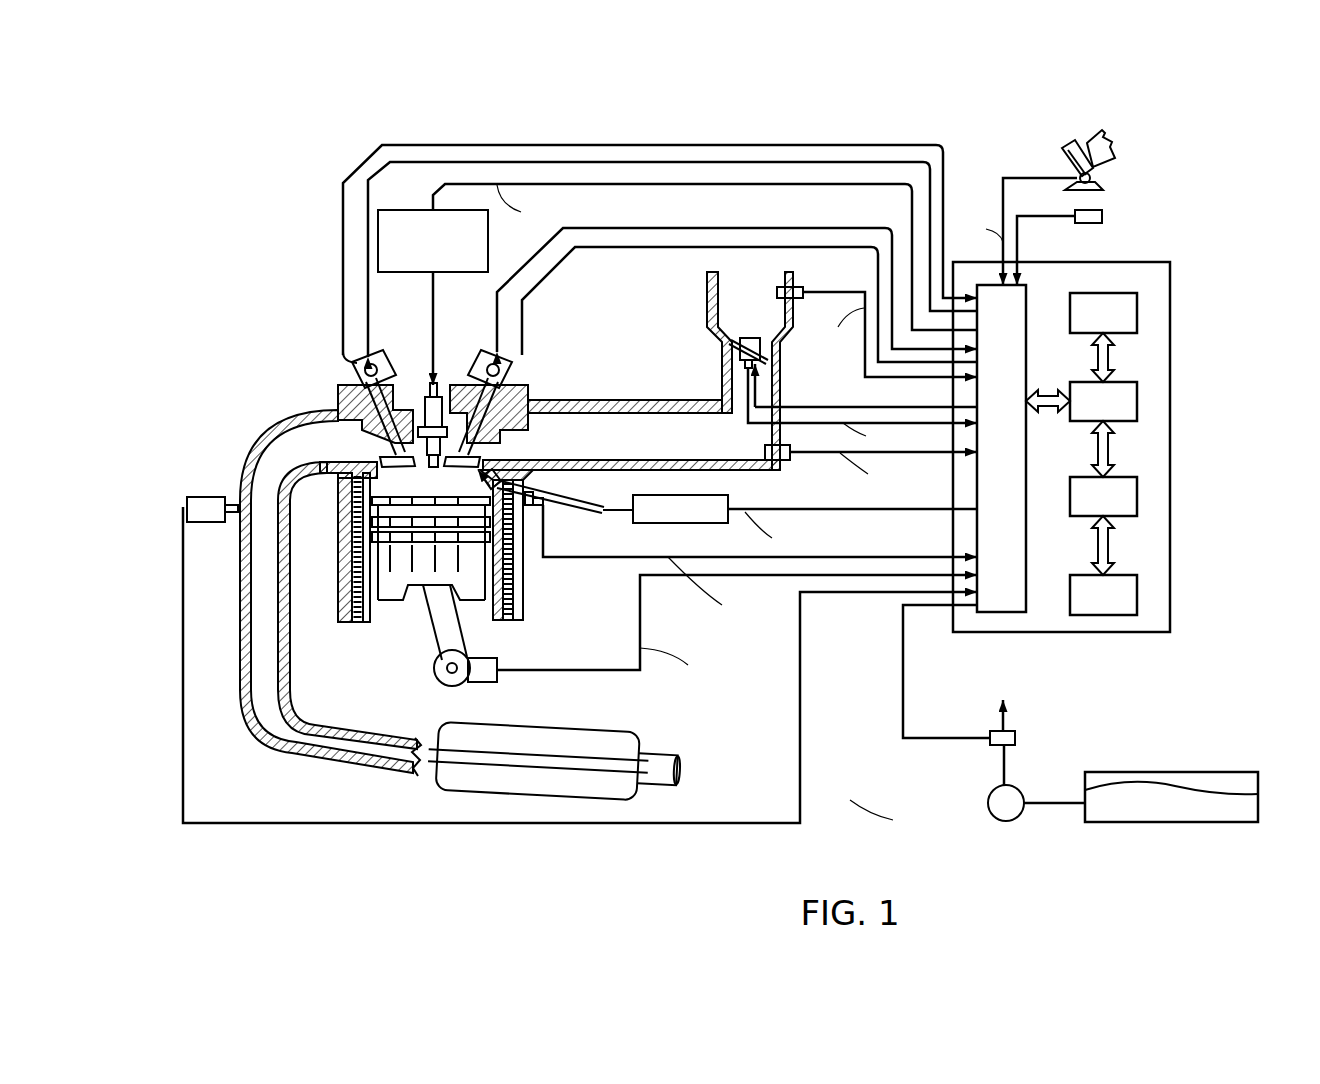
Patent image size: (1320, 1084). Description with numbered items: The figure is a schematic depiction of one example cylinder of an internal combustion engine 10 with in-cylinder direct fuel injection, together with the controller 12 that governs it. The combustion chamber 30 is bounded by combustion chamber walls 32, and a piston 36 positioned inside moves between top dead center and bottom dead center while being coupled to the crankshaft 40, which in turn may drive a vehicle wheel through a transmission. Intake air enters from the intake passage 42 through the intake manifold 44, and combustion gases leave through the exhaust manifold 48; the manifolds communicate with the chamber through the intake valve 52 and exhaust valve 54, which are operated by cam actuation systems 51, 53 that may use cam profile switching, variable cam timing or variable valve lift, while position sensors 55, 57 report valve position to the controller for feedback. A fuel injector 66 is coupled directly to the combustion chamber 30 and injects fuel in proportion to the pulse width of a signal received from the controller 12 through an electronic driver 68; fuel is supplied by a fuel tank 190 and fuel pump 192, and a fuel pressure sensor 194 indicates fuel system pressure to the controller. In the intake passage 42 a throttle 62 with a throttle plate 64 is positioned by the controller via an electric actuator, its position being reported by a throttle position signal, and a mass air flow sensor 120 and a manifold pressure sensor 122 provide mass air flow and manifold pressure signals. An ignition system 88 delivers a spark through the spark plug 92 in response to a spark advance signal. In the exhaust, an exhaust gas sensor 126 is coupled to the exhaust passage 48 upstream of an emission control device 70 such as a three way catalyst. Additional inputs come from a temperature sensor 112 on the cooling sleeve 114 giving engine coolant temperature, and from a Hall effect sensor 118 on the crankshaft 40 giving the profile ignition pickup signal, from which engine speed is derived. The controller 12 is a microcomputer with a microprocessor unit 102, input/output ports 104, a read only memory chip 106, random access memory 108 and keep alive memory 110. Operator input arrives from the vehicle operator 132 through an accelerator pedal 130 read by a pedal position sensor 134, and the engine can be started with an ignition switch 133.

The internal combustion engine 10 is at (280, 342).
The controller 12 is at (1165, 262).
The combustion chamber 30 is at (345, 573).
The combustion chamber walls 32 is at (367, 637).
The piston 36 is at (415, 575).
The crankshaft 40 is at (440, 690).
The intake passage 42 is at (735, 317).
The intake manifold 44 is at (676, 447).
The exhaust manifold 48 is at (295, 453).
The cam actuation system 51 is at (487, 352).
The intake valve 52 is at (470, 447).
The cam actuation system 53 is at (378, 352).
The exhaust valve 54 is at (385, 455).
The position sensor 55 is at (513, 372).
The position sensor 57 is at (365, 372).
The throttle 62 is at (765, 352).
The throttle plate 64 is at (738, 350).
The fuel injector 66 is at (530, 484).
The electronic driver 68 is at (657, 524).
The emission control device 70 is at (600, 728).
The ignition system 88 is at (392, 210).
The spark plug 92 is at (435, 388).
The microprocessor unit 102 is at (1138, 401).
The input/output ports 104 is at (1028, 292).
The read only memory chip 106 is at (1138, 312).
The random access memory 108 is at (1138, 497).
The keep alive memory 110 is at (1138, 593).
The temperature sensor 112 is at (540, 500).
The cooling sleeve 114 is at (510, 575).
The Hall effect sensor 118 is at (483, 684).
The mass air flow sensor 120 is at (797, 287).
The manifold air pressure and/or temperature sensor 122 is at (790, 462).
The exhaust gas sensor 126 is at (187, 505).
The accelerator pedal 130 is at (1068, 158).
The vehicle operator 132 is at (1118, 140).
The ignition switch 133 is at (1103, 216).
The pedal position sensor 134 is at (1115, 182).
The fuel tank 190 is at (1105, 824).
The fuel pump 192 is at (1003, 822).
The fuel pressure sensor 194 is at (990, 747).